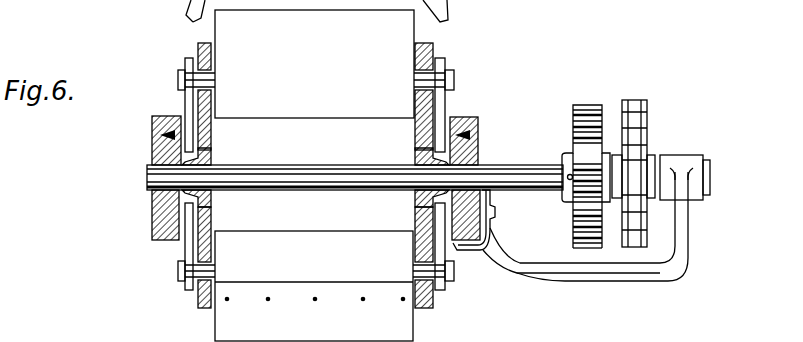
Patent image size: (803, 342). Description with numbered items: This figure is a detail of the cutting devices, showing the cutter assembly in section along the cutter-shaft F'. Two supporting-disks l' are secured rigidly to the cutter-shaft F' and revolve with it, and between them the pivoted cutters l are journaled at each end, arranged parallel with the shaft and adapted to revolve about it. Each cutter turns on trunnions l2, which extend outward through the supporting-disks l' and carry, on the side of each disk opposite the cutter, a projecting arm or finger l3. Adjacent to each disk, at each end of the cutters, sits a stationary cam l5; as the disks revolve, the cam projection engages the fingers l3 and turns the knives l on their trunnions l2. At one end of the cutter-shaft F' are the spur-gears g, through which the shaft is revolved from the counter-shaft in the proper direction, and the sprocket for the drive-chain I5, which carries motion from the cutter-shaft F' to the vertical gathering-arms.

The pivoted cutter l is at (314, 175).
The supporting-disk l' is at (326, 163).
The trunnion l2 is at (183, 80).
The projecting arm or finger l3 is at (188, 107).
The stationary cam l5 is at (186, 215).
The spur-gears g is at (595, 104).
The drive-chain I5 is at (632, 100).
The cutter-shaft F' is at (417, 194).